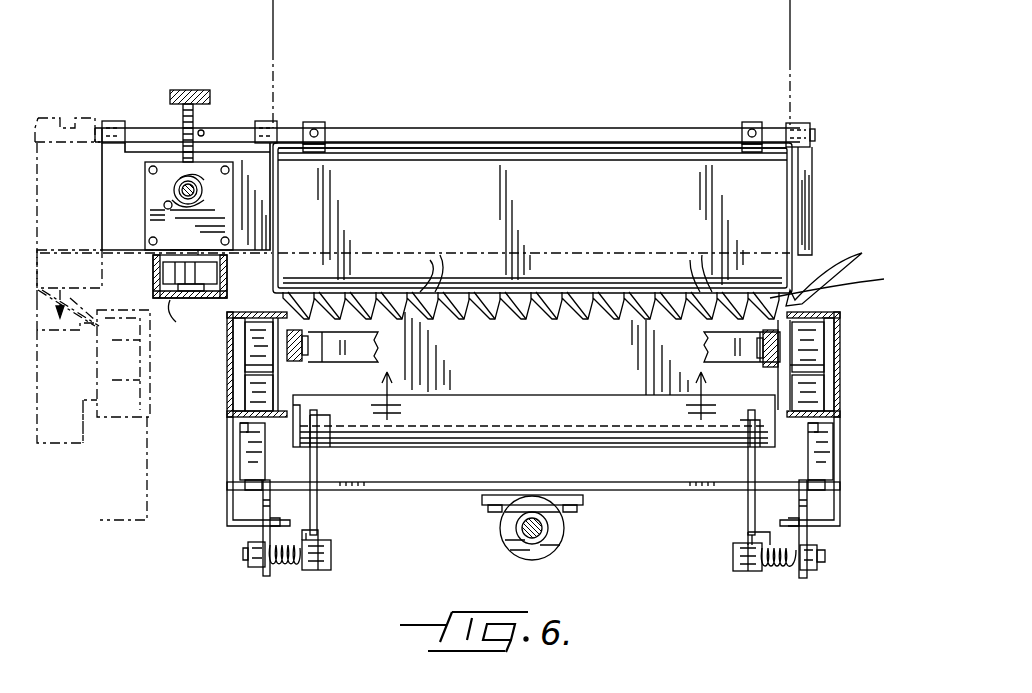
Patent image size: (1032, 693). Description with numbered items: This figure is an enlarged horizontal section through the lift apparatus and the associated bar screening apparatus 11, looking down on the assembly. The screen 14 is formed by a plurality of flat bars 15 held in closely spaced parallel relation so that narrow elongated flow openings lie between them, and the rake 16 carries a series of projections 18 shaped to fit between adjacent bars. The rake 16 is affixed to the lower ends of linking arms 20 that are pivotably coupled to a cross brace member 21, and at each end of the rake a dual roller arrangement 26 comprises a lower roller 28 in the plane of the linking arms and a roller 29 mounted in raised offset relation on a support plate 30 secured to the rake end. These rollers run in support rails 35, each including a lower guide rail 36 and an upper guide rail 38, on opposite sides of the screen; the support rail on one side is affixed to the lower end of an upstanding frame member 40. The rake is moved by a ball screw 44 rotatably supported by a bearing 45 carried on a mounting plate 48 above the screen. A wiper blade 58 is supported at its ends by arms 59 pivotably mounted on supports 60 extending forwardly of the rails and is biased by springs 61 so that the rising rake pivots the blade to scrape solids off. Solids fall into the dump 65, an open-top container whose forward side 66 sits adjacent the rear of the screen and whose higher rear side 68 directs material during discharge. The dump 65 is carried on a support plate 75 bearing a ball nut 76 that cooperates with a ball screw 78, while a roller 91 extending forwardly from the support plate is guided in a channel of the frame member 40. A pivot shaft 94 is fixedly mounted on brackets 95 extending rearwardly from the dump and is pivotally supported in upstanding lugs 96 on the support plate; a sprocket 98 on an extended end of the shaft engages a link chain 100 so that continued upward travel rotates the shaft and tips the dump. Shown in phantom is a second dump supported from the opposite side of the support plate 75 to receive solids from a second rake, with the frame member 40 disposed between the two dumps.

The bar screening apparatus 11 is at (839, 282).
The screen 14 is at (836, 275).
The flat bars 15 is at (566, 258).
The rake 16 is at (592, 367).
The projections 18 is at (488, 322).
The linking arms 20 is at (304, 362).
The cross brace member 21 is at (378, 352).
The dual roller arrangement 26 is at (228, 416).
The lower roller 28 is at (255, 340).
The roller 29 is at (252, 395).
The support plate 30 is at (278, 374).
The support rails 35 is at (230, 370).
The lower guide rail 36 is at (262, 310).
The upper guide rail 38 is at (246, 442).
The upstanding frame member 40 is at (179, 320).
The ball screw 44 is at (526, 530).
The bearing 45 is at (562, 540).
The mounting plate 48 is at (412, 492).
The wiper blade 58 is at (440, 430).
The arms 59 is at (317, 520).
The supports 60 is at (240, 520).
The springs 61 is at (290, 568).
The dump 65 is at (816, 168).
The forward side 66 is at (570, 282).
The rear side 68 is at (555, 156).
The support plate 75 is at (246, 165).
The ball nut 76 is at (174, 185).
The ball screw 78 is at (176, 202).
The roller 91 is at (168, 284).
The pivot shaft 94 is at (92, 108).
The brackets 95 is at (328, 124).
The upstanding lugs 96 is at (114, 121).
The sprocket 98 is at (200, 114).
The link chain 100 is at (178, 107).